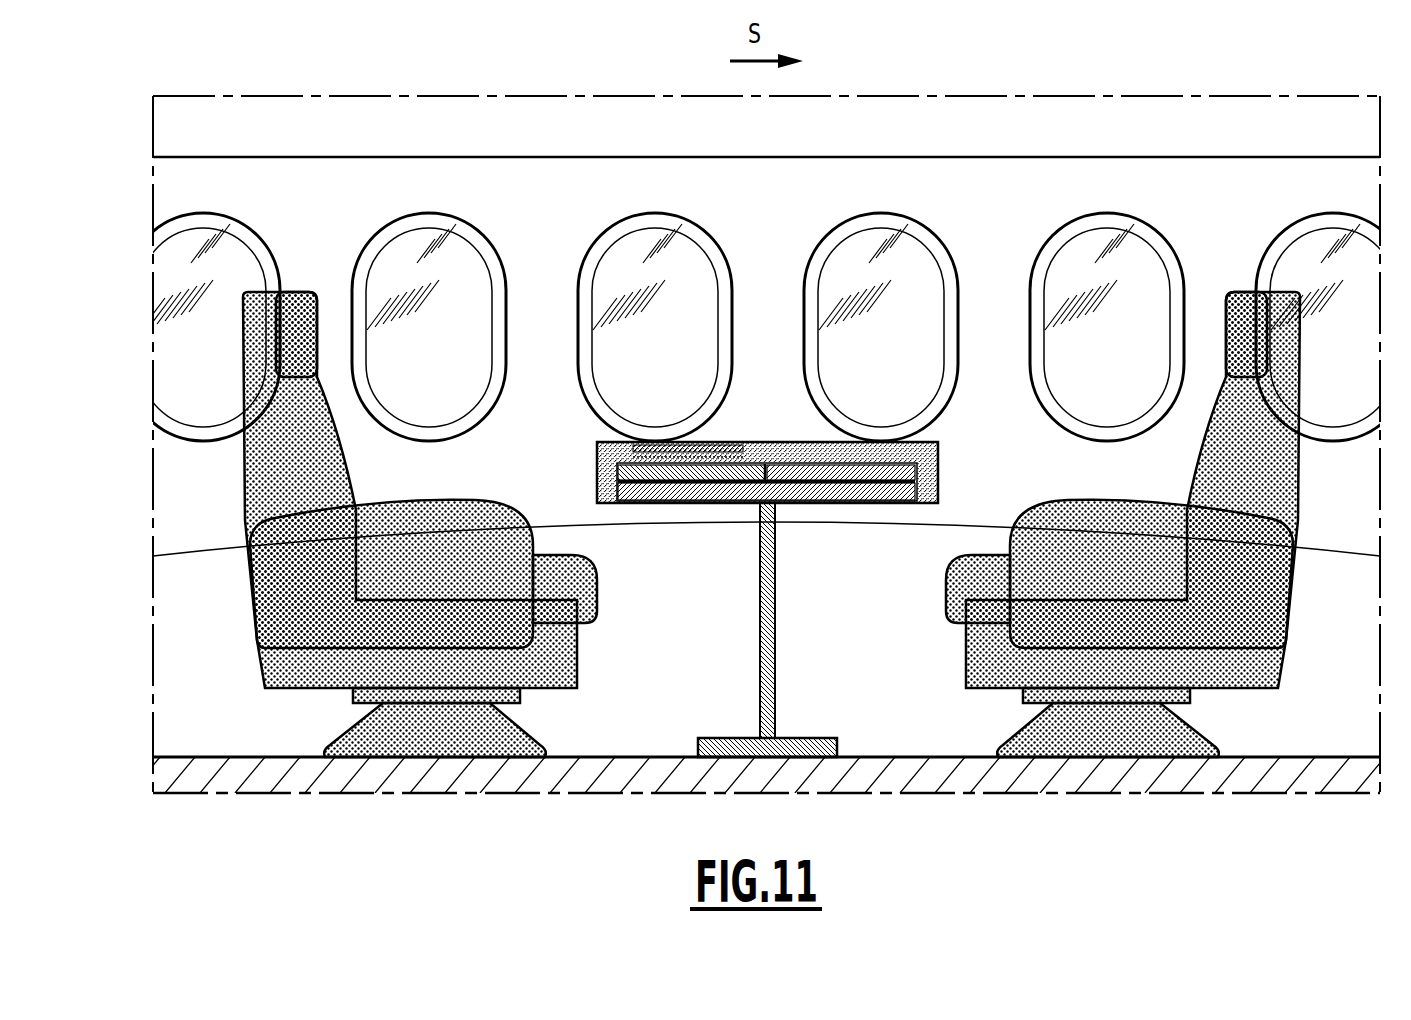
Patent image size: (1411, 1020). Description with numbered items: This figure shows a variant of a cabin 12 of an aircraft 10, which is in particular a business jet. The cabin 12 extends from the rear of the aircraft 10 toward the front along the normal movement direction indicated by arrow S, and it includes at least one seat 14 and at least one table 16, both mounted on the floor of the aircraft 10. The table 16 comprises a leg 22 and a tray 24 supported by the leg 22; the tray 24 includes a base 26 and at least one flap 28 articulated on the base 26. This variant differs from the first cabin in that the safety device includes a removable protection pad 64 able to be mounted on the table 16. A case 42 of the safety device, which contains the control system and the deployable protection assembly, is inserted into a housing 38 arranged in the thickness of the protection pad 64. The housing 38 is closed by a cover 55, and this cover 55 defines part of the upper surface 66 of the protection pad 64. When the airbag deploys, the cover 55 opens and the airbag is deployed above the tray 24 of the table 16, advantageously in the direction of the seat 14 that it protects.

The aircraft 10 is at (763, 220).
The cabin 12 is at (938, 128).
The seat 14 is at (280, 612).
The table 16 is at (746, 522).
The leg 22 is at (792, 667).
The tray 24 is at (746, 485).
The base 26 is at (737, 492).
The flap 28 is at (637, 503).
The housing 38 is at (700, 505).
The case 42 is at (723, 443).
The cover 55 is at (677, 443).
The protection pad 64 is at (938, 480).
The upper surface 66 is at (790, 443).